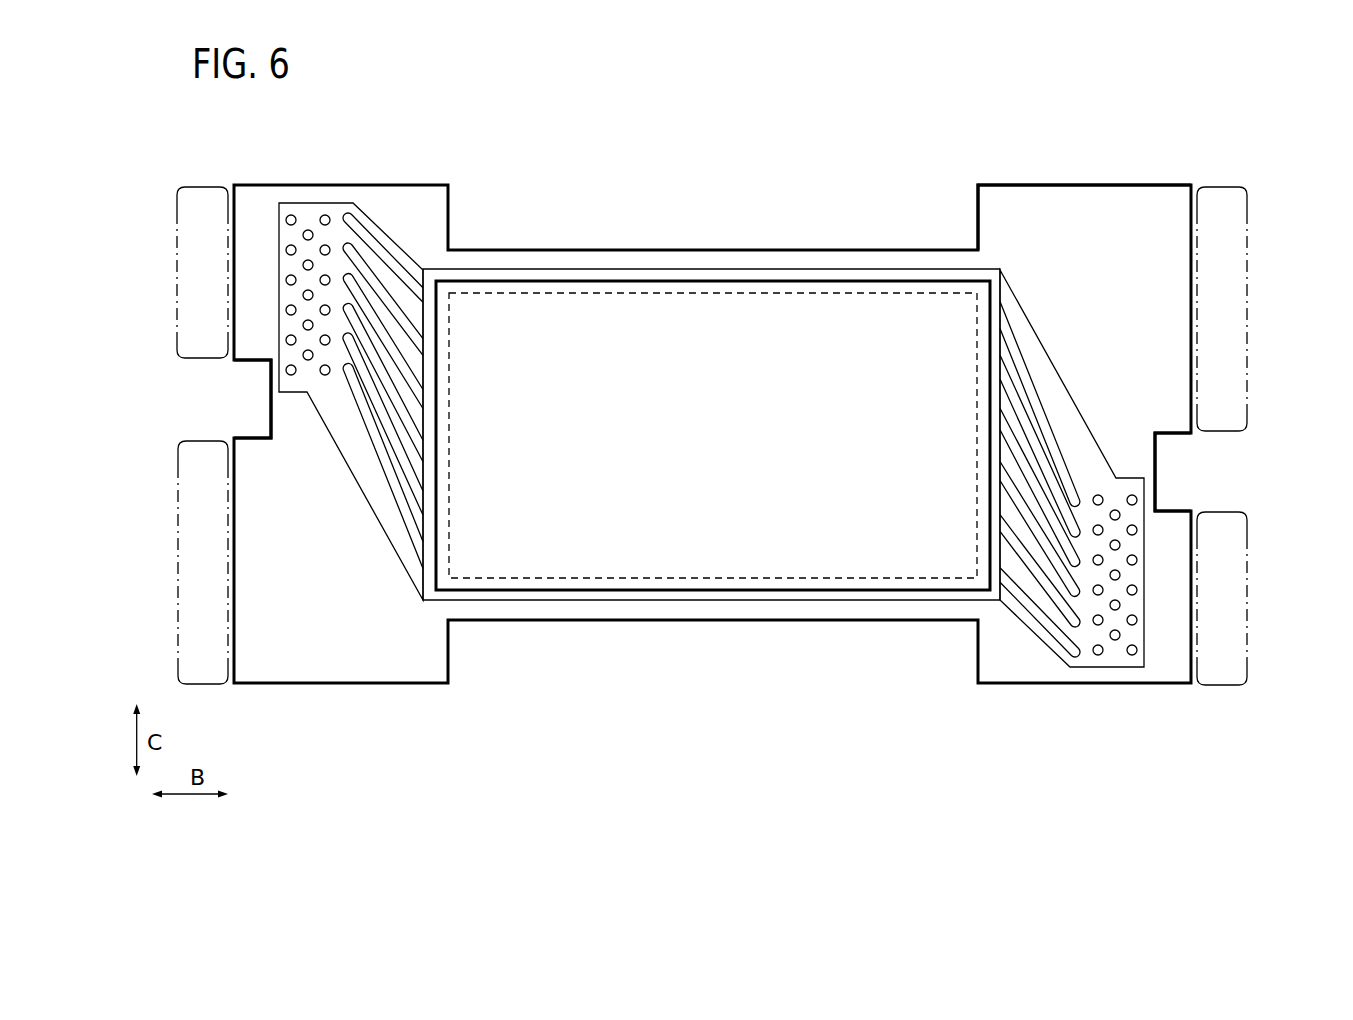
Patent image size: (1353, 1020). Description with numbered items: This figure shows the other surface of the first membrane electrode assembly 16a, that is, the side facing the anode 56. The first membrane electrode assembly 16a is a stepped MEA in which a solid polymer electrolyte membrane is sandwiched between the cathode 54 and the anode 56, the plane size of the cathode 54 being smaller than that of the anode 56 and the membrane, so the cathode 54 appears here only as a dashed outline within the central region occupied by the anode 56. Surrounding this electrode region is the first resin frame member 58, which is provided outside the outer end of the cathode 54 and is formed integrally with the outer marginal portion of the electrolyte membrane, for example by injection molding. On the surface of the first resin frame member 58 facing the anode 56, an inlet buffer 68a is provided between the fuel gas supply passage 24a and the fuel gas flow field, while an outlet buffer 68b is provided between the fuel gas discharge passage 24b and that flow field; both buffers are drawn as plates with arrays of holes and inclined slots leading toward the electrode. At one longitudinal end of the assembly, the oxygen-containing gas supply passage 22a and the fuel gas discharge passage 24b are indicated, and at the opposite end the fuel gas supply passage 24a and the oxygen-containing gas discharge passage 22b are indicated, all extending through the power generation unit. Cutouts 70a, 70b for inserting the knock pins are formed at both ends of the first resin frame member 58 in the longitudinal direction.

The first membrane electrode assembly 16a is at (372, 121).
The cathode 54 is at (627, 314).
The anode 56 is at (553, 316).
The first resin frame member 58 is at (1000, 180).
The inlet buffer 68a is at (390, 210).
The outlet buffer 68b is at (1032, 662).
The oxygen-containing gas supply passage 22a is at (1232, 294).
The oxygen-containing gas discharge passage 22b is at (192, 621).
The fuel gas supply passage 24a is at (192, 291).
The fuel gas discharge passage 24b is at (1228, 621).
The cutout 70a is at (1153, 468).
The cutout 70b is at (270, 405).